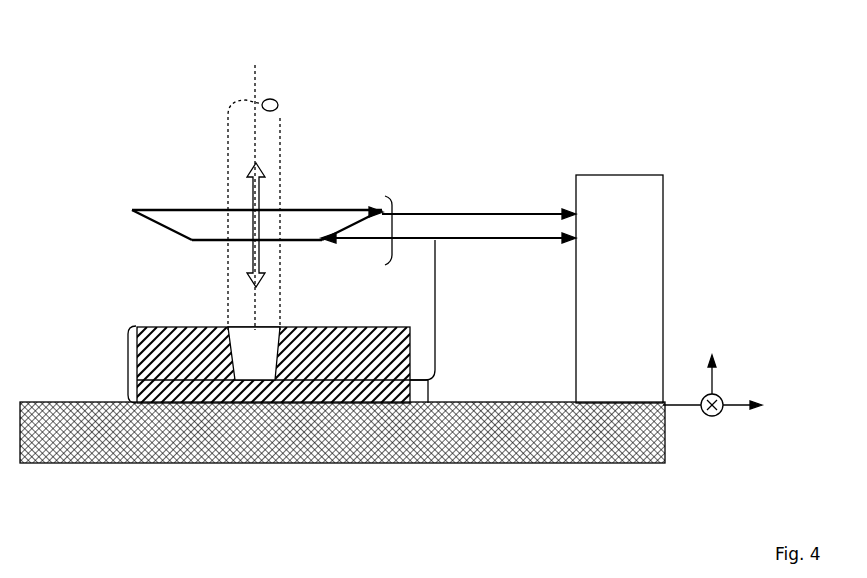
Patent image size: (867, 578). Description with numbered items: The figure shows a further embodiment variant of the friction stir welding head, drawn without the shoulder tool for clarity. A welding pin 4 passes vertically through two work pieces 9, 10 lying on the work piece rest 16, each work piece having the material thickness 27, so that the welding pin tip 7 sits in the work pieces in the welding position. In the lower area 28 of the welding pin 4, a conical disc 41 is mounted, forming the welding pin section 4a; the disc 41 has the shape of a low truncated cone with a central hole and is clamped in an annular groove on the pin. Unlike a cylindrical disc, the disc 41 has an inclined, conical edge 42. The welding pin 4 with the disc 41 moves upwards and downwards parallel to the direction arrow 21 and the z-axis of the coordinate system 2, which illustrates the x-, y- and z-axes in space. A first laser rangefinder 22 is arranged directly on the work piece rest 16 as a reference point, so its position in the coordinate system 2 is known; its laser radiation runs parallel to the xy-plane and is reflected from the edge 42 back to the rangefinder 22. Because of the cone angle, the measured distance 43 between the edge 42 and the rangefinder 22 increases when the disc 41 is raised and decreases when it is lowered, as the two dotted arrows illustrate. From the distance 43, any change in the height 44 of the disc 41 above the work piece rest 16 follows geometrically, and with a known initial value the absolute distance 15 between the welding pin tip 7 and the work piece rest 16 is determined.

The coordinate system 2 is at (738, 405).
The welding pin 4 is at (269, 98).
The welding pin section 4a is at (395, 208).
The welding pin tip 7 is at (262, 360).
The work piece 9 is at (161, 355).
The work piece 10 is at (397, 360).
The distance 15 is at (430, 393).
The work piece rest 16 is at (666, 434).
The direction arrow 21 is at (263, 183).
The first laser rangefinder 22 is at (626, 237).
The material thickness 27 is at (126, 363).
The lower area 28 is at (158, 183).
The conical disc 41 is at (218, 189).
The inclined edge 42 is at (142, 218).
The distance 43 is at (465, 238).
The height 44 is at (438, 310).